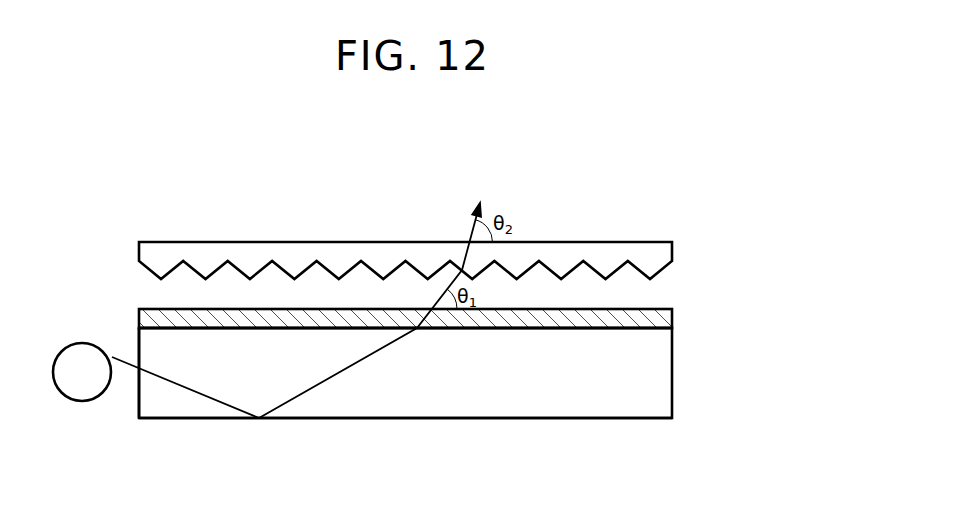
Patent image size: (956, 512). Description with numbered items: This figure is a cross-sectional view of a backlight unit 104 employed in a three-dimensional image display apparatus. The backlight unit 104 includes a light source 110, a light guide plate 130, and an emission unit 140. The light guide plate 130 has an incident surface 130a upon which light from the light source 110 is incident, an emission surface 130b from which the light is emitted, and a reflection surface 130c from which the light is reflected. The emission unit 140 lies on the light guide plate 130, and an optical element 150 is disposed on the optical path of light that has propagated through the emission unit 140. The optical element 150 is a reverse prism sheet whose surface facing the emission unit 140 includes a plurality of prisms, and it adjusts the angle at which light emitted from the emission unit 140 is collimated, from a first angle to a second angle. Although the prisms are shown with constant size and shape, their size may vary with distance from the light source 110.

The backlight unit 104 is at (677, 208).
The light source 110 is at (73, 352).
The light guide plate 130 is at (667, 378).
The incident surface 130a is at (138, 388).
The emission surface 130b is at (627, 328).
The reflection surface 130c is at (405, 418).
The emission unit 140 is at (668, 318).
The optical element 150 is at (668, 253).